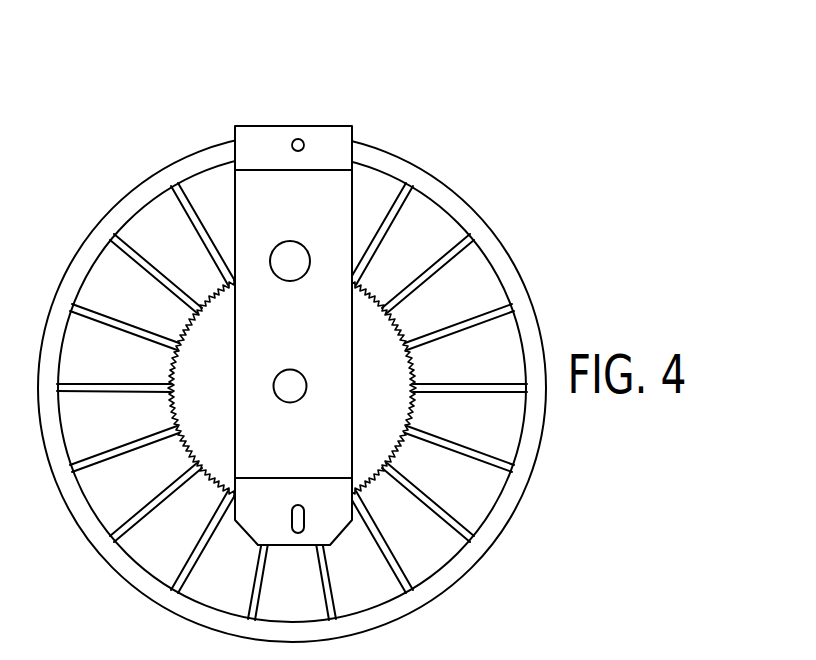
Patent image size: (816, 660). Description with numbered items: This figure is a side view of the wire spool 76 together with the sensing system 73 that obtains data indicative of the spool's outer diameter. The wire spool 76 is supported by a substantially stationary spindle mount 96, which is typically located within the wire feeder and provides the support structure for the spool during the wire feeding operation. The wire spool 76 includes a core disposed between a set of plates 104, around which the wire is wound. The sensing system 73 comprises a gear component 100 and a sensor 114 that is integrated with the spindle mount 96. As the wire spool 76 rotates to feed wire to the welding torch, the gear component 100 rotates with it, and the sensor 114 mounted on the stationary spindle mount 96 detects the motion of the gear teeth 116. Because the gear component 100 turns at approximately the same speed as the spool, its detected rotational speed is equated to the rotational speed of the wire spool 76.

The wire spool 76 is at (300, 346).
The spindle mount 96 is at (263, 137).
The plates 104 is at (388, 163).
The sensing system 73 is at (280, 299).
The sensor 114 is at (295, 255).
The gear component 100 is at (385, 333).
The gear teeth 116 is at (190, 322).